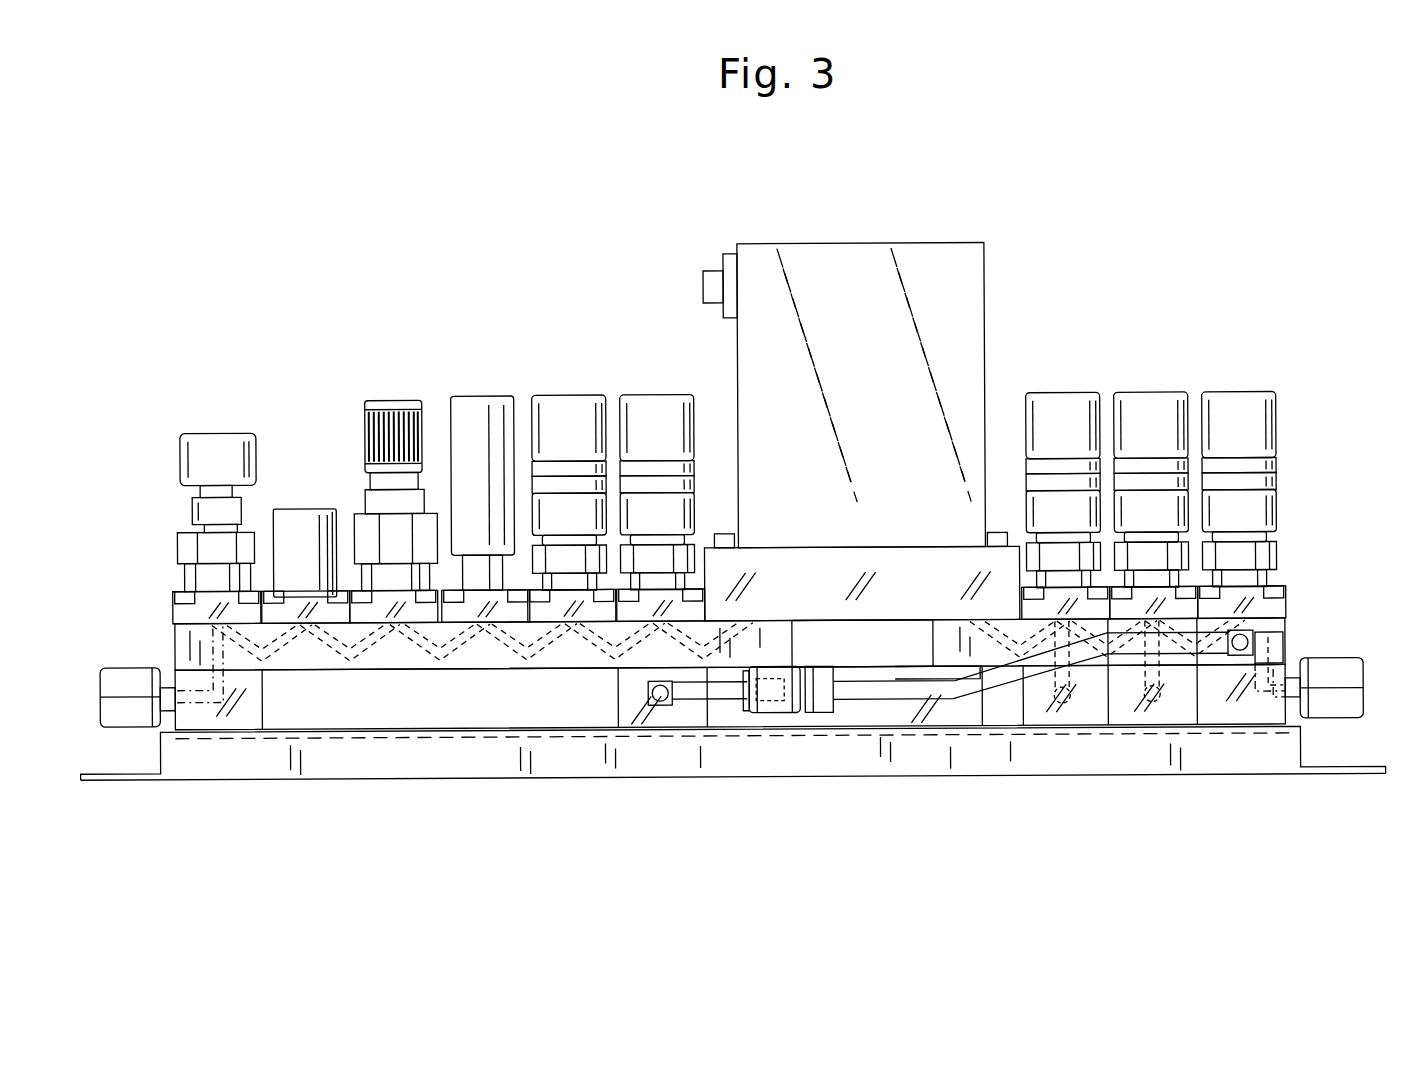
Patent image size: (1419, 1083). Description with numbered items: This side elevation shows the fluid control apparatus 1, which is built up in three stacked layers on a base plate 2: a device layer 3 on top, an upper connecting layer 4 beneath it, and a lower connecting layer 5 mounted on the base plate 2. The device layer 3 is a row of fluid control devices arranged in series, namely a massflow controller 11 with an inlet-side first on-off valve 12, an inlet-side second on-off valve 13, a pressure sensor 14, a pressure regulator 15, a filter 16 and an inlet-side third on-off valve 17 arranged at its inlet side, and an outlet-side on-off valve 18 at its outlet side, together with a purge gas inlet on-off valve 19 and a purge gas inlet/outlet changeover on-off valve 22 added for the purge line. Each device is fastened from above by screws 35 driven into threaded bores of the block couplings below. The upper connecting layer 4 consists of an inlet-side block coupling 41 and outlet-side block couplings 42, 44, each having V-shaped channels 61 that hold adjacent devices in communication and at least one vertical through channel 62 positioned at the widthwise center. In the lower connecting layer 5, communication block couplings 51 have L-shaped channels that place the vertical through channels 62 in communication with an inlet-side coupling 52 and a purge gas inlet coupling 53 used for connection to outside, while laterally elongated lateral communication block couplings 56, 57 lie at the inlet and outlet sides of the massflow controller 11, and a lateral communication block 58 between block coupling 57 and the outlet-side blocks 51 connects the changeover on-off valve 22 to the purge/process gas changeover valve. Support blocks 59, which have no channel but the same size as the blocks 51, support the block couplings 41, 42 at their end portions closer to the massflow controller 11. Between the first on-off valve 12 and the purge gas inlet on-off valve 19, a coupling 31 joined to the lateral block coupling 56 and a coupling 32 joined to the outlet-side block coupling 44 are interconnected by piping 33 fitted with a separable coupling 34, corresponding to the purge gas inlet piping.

The fluid control apparatus 1 is at (1214, 246).
The base plate 2 is at (733, 802).
The device layer 3 is at (1182, 537).
The upper connecting layer 4 is at (1299, 654).
The lower connecting layer 5 is at (1344, 661).
The massflow controller 11 is at (883, 431).
The inlet-side first on-off valve 12 is at (656, 453).
The inlet-side second on-off valve 13 is at (568, 453).
The pressure sensor 14 is at (482, 454).
The pressure regulator 15 is at (395, 453).
The filter 16 is at (305, 516).
The inlet-side third on-off valve 17 is at (216, 475).
The outlet-side on-off valve 18 is at (1062, 449).
The purge gas inlet on-off valve 19 is at (1238, 448).
The purge gas inlet/outlet changeover on-off valve 22 is at (1150, 448).
The coupling 31 is at (689, 760).
The coupling 32 is at (1291, 603).
The piping 33 is at (1031, 736).
The separable coupling 34 is at (729, 760).
The screw 35 is at (730, 481).
The inlet-side block coupling 41 is at (693, 652).
The outlet-side block coupling 42 is at (863, 646).
The outlet-side block coupling 44 is at (1326, 630).
The communication block coupling 51 is at (730, 731).
The inlet-side coupling 52 is at (138, 753).
The purge gas inlet coupling 53 is at (1336, 747).
The lateral communication block coupling 56 is at (644, 767).
The lateral communication block coupling 57 is at (1055, 747).
The lateral communication block 58 is at (1149, 747).
The support block 59 is at (862, 753).
The V-shaped channel 61 is at (644, 731).
The vertical through channel 62 is at (711, 694).